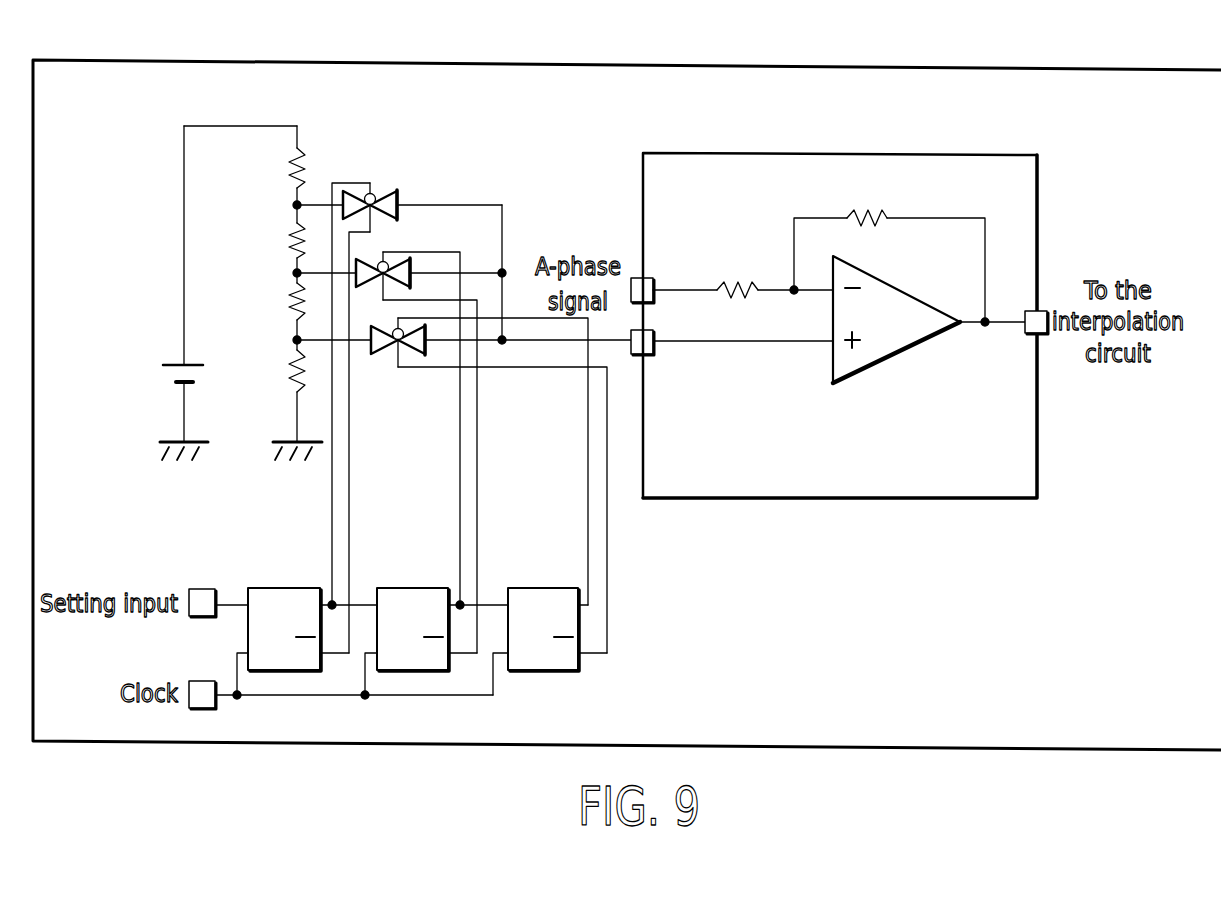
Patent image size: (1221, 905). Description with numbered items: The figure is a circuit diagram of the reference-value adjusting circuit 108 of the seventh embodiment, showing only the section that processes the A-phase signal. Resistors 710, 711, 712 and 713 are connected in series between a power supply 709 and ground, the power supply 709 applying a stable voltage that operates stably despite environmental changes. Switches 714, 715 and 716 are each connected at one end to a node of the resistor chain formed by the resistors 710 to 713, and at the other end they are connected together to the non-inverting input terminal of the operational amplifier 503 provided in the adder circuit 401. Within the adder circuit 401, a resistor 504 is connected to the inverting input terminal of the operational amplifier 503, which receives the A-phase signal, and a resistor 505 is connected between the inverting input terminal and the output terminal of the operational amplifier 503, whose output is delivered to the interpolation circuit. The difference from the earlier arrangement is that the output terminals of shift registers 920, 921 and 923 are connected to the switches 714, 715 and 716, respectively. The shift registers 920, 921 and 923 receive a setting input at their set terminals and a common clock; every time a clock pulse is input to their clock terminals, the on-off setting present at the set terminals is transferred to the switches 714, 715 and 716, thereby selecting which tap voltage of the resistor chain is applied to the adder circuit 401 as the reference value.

The reference-value adjusting circuit 108 is at (1043, 76).
The adder circuit 401 is at (686, 165).
The operational amplifier 503 is at (907, 352).
The resistor 504 is at (738, 275).
The resistor 505 is at (883, 213).
The power supply 709 is at (200, 375).
The resistor 710 is at (287, 178).
The resistor 711 is at (287, 235).
The resistor 712 is at (287, 300).
The resistor 713 is at (287, 364).
The switch 714 is at (383, 357).
The switch 715 is at (395, 262).
The switch 716 is at (382, 190).
The shift register 920 is at (285, 586).
The shift register 921 is at (410, 586).
The shift register 923 is at (547, 586).